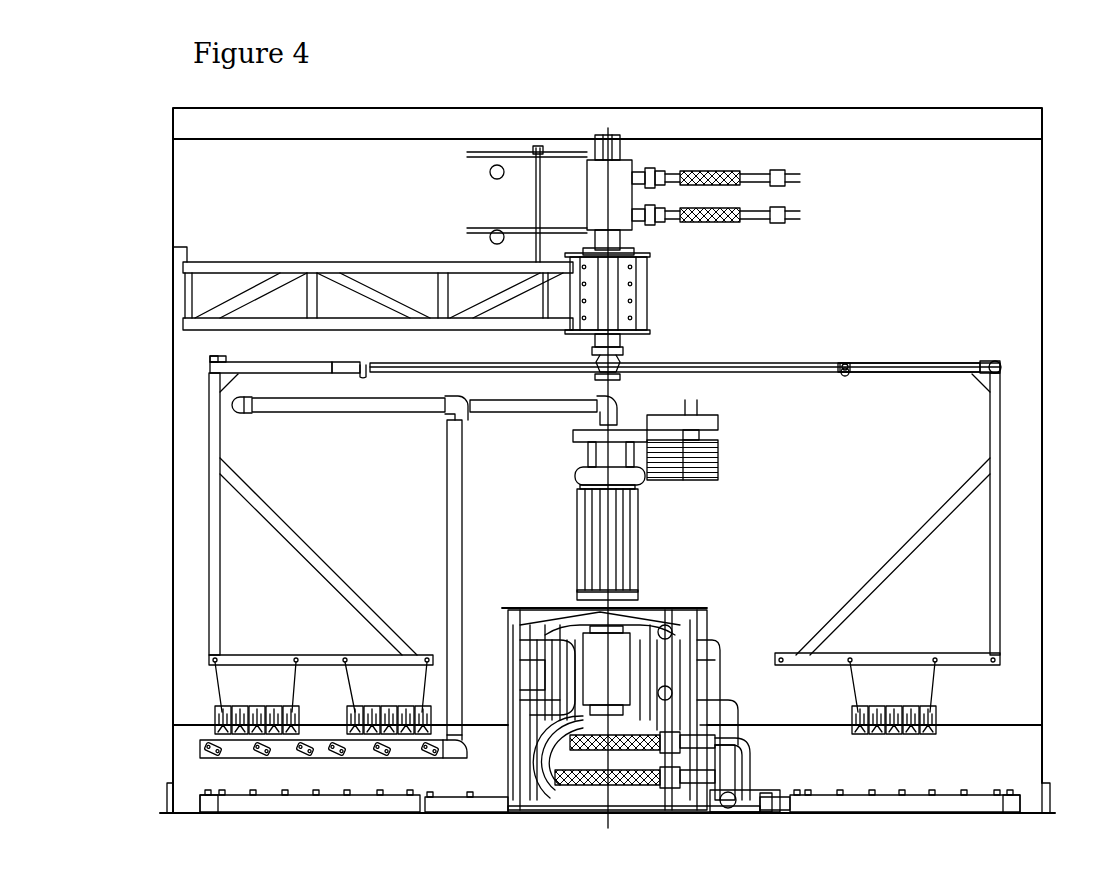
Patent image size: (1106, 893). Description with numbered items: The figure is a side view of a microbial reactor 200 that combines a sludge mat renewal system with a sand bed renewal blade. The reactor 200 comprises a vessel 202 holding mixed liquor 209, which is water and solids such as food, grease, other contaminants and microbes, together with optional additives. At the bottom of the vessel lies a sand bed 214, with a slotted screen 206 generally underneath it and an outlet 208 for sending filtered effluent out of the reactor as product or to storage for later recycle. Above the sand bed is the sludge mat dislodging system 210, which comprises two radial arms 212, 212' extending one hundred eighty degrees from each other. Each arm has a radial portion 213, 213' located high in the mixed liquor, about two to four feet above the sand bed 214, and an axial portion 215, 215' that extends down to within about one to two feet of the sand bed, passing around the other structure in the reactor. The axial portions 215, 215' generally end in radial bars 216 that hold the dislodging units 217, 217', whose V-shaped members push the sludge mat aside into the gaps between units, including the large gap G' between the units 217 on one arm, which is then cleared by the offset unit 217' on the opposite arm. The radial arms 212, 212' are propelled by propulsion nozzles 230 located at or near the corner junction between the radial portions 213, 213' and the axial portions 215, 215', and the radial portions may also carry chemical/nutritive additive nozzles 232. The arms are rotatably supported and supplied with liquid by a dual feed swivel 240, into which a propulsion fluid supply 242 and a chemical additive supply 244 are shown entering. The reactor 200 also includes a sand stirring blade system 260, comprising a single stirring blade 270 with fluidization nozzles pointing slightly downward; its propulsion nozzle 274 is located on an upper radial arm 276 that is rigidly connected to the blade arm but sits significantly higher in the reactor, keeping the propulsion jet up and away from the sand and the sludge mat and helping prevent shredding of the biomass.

The microbial reactor 200 is at (148, 228).
The vessel 202 is at (173, 458).
The slotted screen 206 is at (272, 792).
The outlet 208 is at (207, 808).
The mixed liquor 209 is at (913, 250).
The sludge mat dislodging system 210 is at (348, 503).
The radial arm 212 is at (591, 317).
The radial arm 212' is at (910, 337).
The radial portion 213 is at (368, 354).
The radial portion 213' is at (845, 337).
The sand bed 214 is at (220, 775).
The axial portion 215 is at (314, 537).
The axial portion 215' is at (893, 535).
The radial bar 216 is at (303, 655).
The dislodging unit 217 is at (323, 672).
The dislodging unit 217' is at (893, 668).
The propulsion nozzle 230 is at (210, 360).
The chemical/nutritive additive nozzle 232 is at (368, 378).
The dual feed swivel 240 is at (668, 317).
The propulsion fluid supply 242 is at (738, 222).
The chemical additive supply 244 is at (738, 170).
The sand stirring blade system 260 is at (433, 588).
The stirring blade 270 is at (215, 740).
The propulsion nozzle/opening 274 is at (232, 405).
The upper radial arm 276 is at (323, 414).
The gap G' is at (327, 695).